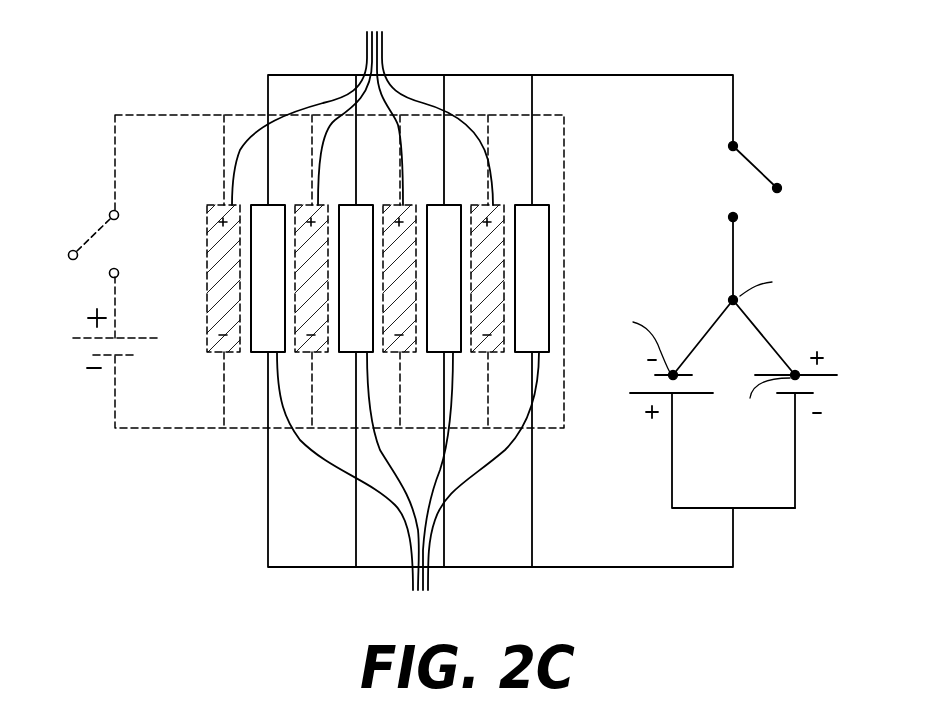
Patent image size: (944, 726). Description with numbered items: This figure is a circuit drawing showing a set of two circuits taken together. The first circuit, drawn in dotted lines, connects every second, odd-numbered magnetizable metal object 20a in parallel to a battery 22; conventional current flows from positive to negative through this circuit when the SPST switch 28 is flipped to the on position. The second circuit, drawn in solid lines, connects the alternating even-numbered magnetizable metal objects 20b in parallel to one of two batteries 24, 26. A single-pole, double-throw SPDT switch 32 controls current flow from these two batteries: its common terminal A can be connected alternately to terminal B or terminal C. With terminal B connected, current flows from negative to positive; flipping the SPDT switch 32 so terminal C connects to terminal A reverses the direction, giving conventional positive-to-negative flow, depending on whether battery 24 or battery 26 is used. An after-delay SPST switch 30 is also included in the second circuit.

The odd-numbered magnetizable metal objects 20a is at (362, 105).
The even-numbered magnetizable metal objects 20b is at (408, 489).
The battery 22 is at (83, 338).
The battery 24 is at (638, 393).
The battery 26 is at (830, 377).
The SPST switch 28 is at (93, 232).
The after-delay SPST switch 30 is at (757, 167).
The SPDT switch 32 is at (710, 328).